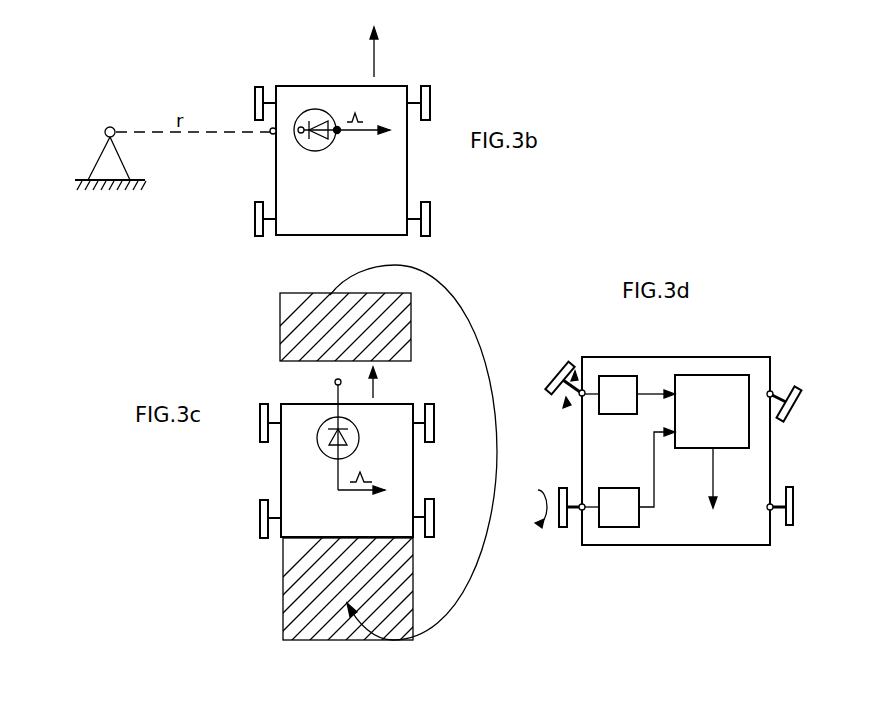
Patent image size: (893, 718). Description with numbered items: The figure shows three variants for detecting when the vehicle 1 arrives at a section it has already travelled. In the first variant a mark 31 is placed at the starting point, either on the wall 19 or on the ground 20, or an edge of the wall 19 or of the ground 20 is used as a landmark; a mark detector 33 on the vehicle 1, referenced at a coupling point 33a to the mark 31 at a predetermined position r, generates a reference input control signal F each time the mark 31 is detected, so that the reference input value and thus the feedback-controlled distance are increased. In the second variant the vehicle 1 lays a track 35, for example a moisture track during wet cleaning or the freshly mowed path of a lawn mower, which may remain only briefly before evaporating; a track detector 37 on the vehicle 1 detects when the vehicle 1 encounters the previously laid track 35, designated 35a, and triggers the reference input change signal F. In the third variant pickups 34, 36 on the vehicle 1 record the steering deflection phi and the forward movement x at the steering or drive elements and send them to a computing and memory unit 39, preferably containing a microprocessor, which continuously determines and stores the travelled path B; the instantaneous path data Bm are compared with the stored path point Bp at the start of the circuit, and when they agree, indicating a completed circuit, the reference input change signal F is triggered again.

In FIG. 3b, the vehicle 1 is at (409, 170).
In FIG. 3c, the vehicle 1 is at (413, 480).
In FIG. 3d, the vehicle 1 is at (723, 545).
In FIG. 3b, the wall 19 is at (110, 189).
In FIG. 3b, the ground 20 is at (110, 189).
In FIG. 3b, the mark 31 is at (112, 127).
In FIG. 3b, the mark detector 33 is at (300, 145).
In FIG. 3b, the coupling point of the mark detector 33a is at (270, 134).
In FIG. 3d, the pickup for steering deflection 34 is at (617, 376).
In FIG. 3c, the track 35 is at (288, 587).
In FIG. 3c, the previously laid track 35a is at (290, 303).
In FIG. 3d, the pickup for forward movement 36 is at (622, 528).
In FIG. 3c, the track detector 37 is at (322, 452).
In FIG. 3d, the computing and memory unit 39 is at (723, 375).